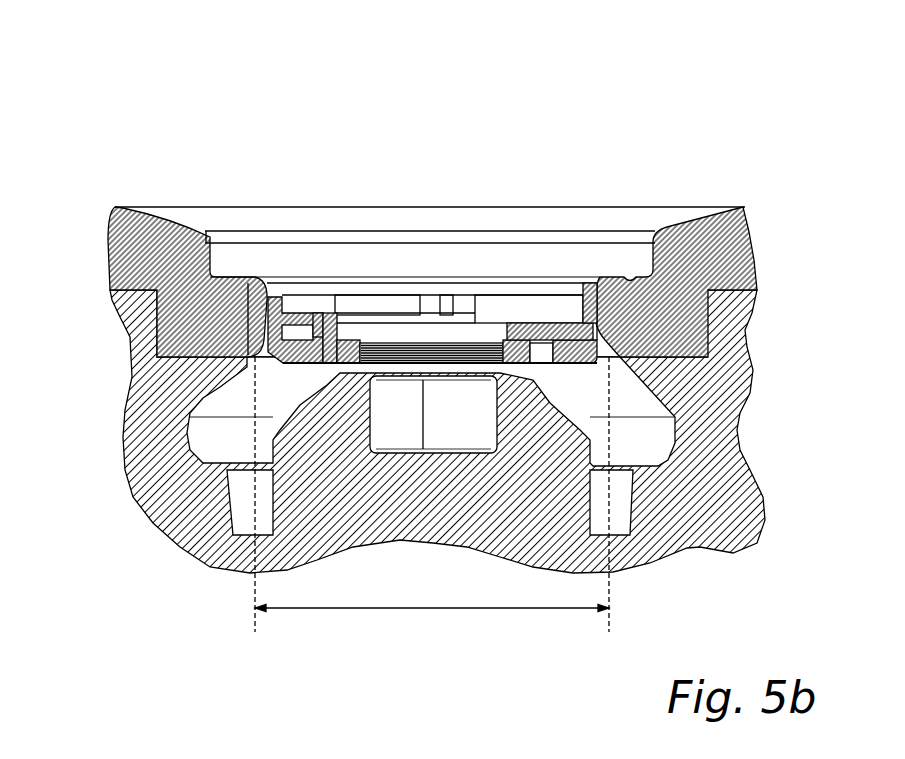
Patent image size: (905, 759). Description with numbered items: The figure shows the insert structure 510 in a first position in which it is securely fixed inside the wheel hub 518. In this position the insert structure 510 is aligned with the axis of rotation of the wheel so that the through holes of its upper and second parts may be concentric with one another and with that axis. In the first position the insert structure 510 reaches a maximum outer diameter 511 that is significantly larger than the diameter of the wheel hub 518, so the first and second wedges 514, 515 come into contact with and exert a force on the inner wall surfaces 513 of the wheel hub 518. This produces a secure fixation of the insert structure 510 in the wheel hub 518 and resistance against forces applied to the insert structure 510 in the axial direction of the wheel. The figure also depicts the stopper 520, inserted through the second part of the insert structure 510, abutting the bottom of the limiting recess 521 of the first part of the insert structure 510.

The insert structure 510 is at (470, 276).
The maximum outer diameter 511 is at (380, 608).
The inner wall surfaces 513 is at (248, 300).
The first wedge 514 is at (590, 358).
The second wedge 515 is at (258, 357).
The wheel hub 518 is at (193, 270).
The stopper 520 is at (333, 317).
The limiting recess 521 is at (317, 317).